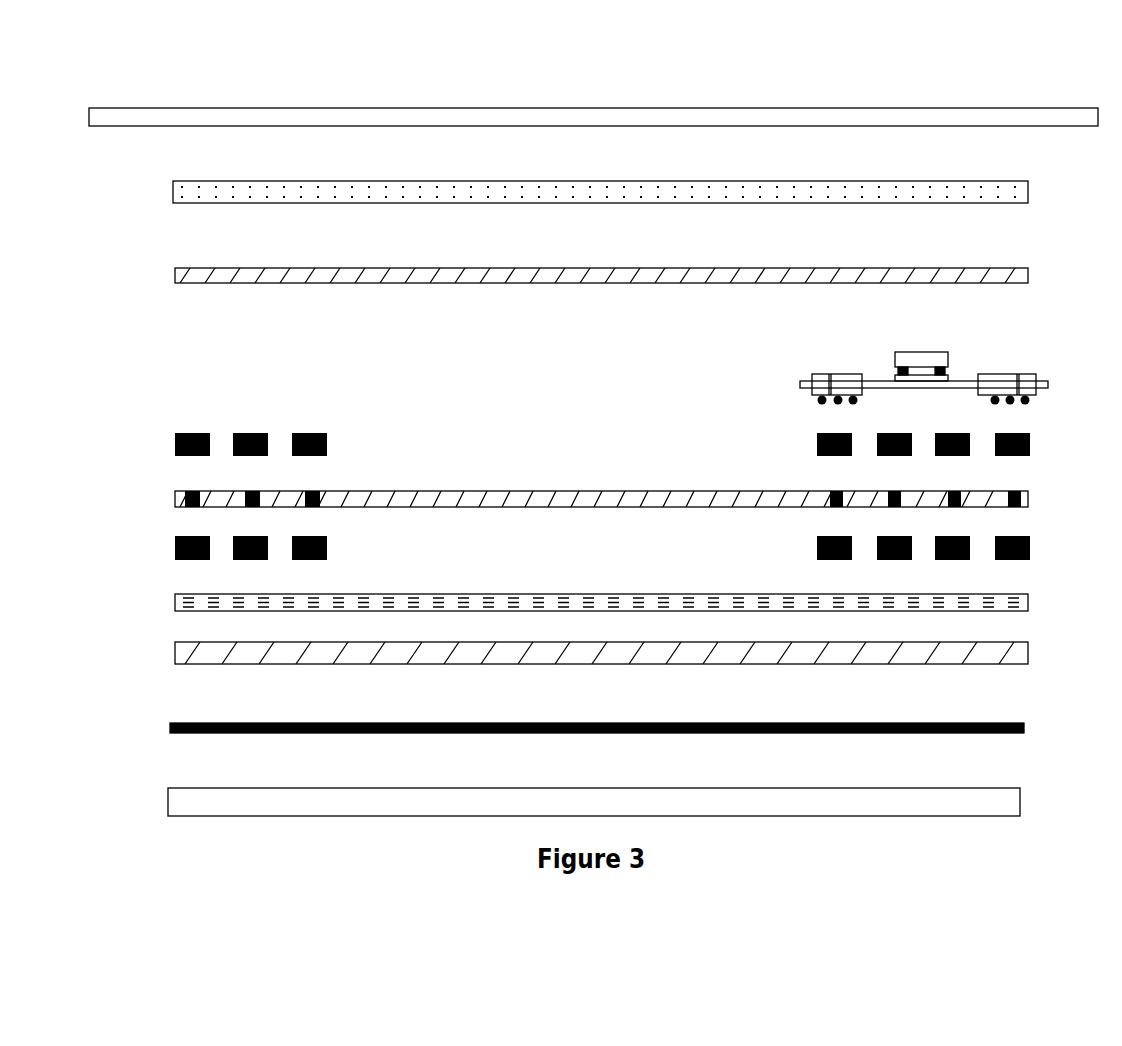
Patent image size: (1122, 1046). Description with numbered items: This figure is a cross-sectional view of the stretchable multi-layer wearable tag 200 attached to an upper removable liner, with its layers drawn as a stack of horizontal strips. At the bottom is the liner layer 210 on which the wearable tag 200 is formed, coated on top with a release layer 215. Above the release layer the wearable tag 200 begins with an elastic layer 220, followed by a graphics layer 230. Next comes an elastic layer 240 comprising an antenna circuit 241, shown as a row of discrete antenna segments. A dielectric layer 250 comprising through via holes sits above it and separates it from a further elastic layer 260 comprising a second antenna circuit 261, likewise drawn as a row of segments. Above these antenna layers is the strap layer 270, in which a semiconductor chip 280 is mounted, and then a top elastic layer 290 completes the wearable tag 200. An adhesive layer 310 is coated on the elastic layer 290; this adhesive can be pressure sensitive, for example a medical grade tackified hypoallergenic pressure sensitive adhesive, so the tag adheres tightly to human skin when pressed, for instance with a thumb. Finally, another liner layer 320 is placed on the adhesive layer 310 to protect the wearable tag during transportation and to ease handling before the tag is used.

The wearable tag 200 is at (133, 243).
The liner layer 210 is at (995, 800).
The release layer 215 is at (1008, 723).
The elastic layer 220 is at (1013, 655).
The graphics layer 230 is at (627, 603).
The elastic layer 240 is at (638, 550).
The antenna circuit 241 is at (325, 555).
The dielectric layer 250 is at (637, 500).
The elastic layer 260 is at (638, 423).
The antenna circuit 261 is at (313, 433).
The strap layer 270 is at (956, 364).
The semiconductor chip 280 is at (907, 357).
The elastic layer 290 is at (1000, 278).
The adhesive layer 310 is at (995, 196).
The liner layer 320 is at (985, 118).